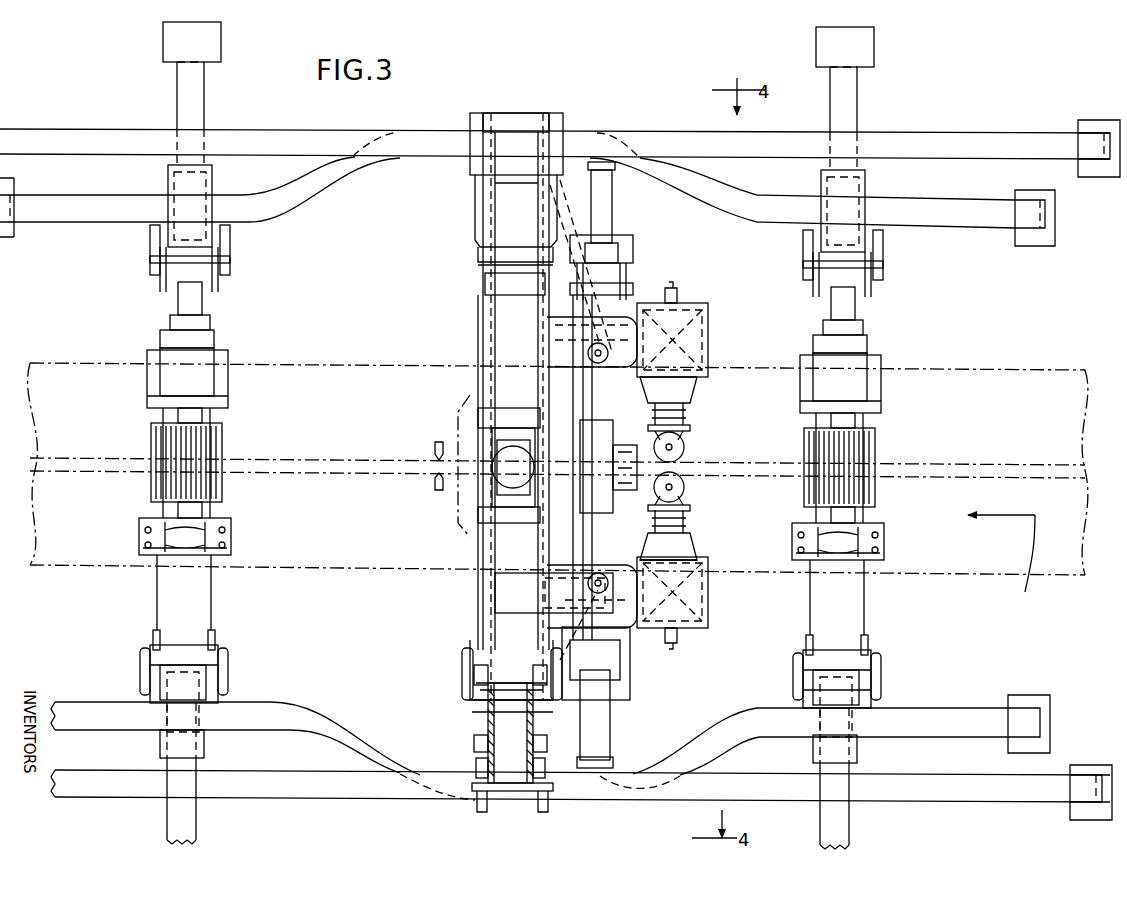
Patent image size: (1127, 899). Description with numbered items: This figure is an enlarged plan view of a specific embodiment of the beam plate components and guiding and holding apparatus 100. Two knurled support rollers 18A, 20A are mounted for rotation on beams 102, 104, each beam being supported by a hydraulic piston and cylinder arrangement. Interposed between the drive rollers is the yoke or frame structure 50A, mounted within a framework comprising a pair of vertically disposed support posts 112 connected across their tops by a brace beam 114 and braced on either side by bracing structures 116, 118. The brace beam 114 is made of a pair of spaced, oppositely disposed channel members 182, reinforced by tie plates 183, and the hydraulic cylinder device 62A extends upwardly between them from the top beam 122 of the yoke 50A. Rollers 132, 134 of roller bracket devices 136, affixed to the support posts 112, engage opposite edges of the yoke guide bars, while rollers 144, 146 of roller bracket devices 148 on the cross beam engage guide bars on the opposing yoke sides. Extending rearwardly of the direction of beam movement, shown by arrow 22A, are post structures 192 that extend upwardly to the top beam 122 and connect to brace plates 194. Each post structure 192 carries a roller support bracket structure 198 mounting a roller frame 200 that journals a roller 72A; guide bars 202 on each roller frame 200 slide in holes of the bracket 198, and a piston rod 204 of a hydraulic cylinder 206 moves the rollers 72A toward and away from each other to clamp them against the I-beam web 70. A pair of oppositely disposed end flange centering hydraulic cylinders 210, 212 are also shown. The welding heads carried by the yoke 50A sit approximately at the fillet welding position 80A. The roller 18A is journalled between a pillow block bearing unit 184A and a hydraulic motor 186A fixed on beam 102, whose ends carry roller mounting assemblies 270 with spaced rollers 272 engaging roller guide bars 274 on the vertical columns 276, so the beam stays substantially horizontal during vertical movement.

The beam plate components and guiding and holding apparatus 100 is at (965, 112).
The beam 102 is at (866, 630).
The beam 104 is at (212, 600).
The support posts 112 is at (512, 812).
The brace beam 114 is at (476, 587).
The bracing structure 116 is at (378, 757).
The bracing structure 118 is at (340, 792).
The top beam 122 is at (503, 633).
The roller 132 is at (480, 722).
The roller 134 is at (478, 746).
The roller bracket device 136 is at (552, 760).
The roller 144 is at (477, 690).
The roller 146 is at (476, 674).
The roller bracket device 148 is at (463, 662).
The channel member 182 is at (548, 212).
The tie plate 183 is at (490, 286).
The pillow block bearing unit 184A is at (233, 540).
The hydraulic motor 186A is at (230, 356).
The post structure 192 is at (703, 303).
The brace plate 194 is at (628, 320).
The roller support bracket structure 198 is at (690, 406).
The roller frame 200 is at (692, 429).
The guide bar 202 is at (688, 417).
The piston rod 204 is at (692, 386).
The hydraulic cylinder 206 is at (692, 332).
The end flange centering hydraulic cylinder 210 is at (600, 196).
The end flange centering hydraulic cylinder 212 is at (603, 728).
The roller mounting assembly 270 is at (142, 660).
The roller 272 is at (148, 680).
The roller guide bar 274 is at (810, 704).
The vertical column 276 is at (206, 745).
The knurled support roller 18A is at (878, 466).
The knurled support roller 20A is at (224, 462).
The arrow 22A is at (1006, 563).
The yoke or frame structure 50A is at (462, 598).
The hydraulic cylinder device 62A is at (478, 482).
The I-beam web 70 is at (347, 464).
The roller 72A is at (686, 448).
The fillet welding position 80A is at (435, 440).